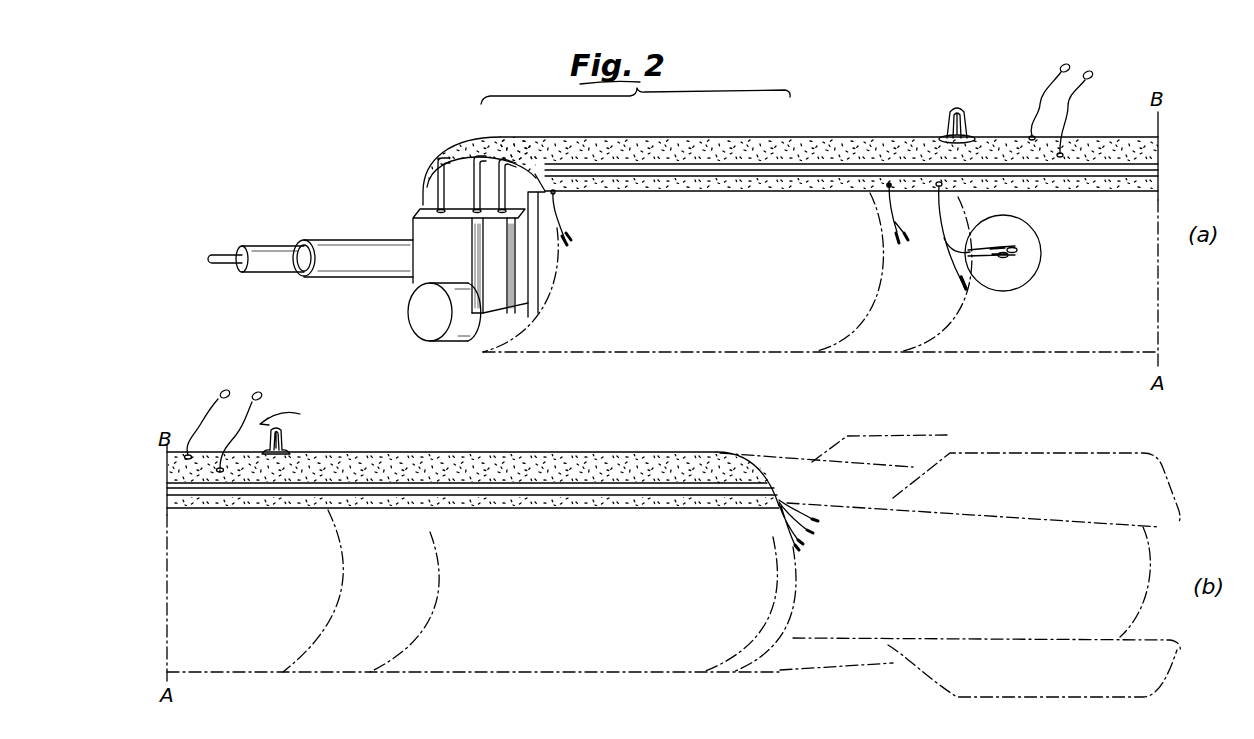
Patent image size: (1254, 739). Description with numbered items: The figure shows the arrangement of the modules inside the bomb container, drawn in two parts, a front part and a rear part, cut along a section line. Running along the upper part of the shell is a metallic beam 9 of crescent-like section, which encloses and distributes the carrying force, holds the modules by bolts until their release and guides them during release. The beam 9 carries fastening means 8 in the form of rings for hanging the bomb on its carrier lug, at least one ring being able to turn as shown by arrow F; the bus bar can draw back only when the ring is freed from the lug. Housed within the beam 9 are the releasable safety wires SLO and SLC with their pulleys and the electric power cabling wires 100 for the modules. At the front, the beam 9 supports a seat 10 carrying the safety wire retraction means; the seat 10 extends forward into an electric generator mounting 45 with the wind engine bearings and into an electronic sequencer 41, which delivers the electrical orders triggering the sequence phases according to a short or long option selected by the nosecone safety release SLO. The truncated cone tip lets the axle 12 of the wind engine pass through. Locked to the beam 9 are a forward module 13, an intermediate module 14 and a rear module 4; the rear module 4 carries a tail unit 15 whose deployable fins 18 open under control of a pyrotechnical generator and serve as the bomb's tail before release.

The rear module 4 is at (585, 655).
The fastening means 8 is at (285, 440).
The metallic beam 9 is at (713, 142).
The seat 10 is at (420, 227).
The axle of the wind engine 12 is at (227, 255).
The forward module 13 is at (741, 333).
The intermediate module 14 is at (1081, 325).
The tail unit 15 is at (1141, 565).
The deployable fins 18 is at (1070, 465).
The electronic sequencer 41 is at (421, 317).
The electric generator mounting 45 is at (284, 268).
The electric power cabling wires 100 is at (904, 262).
The nosecone safety release wire SLO is at (1077, 70).
The releasable safety wire SLC is at (243, 393).
The arrow indicating ring rotation F is at (287, 414).